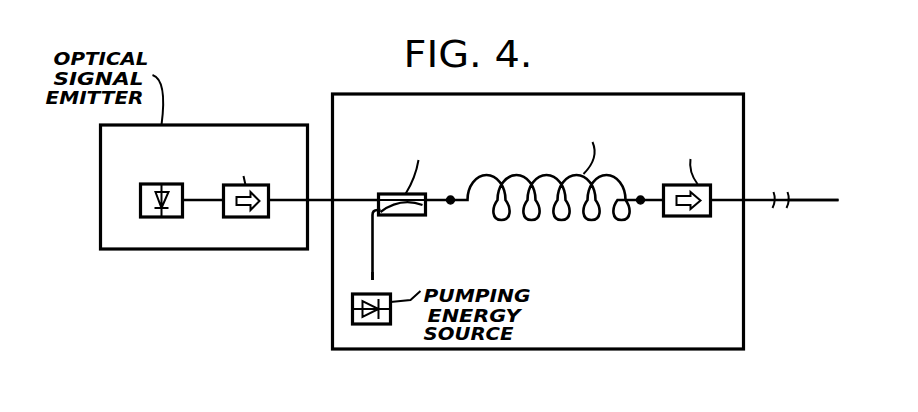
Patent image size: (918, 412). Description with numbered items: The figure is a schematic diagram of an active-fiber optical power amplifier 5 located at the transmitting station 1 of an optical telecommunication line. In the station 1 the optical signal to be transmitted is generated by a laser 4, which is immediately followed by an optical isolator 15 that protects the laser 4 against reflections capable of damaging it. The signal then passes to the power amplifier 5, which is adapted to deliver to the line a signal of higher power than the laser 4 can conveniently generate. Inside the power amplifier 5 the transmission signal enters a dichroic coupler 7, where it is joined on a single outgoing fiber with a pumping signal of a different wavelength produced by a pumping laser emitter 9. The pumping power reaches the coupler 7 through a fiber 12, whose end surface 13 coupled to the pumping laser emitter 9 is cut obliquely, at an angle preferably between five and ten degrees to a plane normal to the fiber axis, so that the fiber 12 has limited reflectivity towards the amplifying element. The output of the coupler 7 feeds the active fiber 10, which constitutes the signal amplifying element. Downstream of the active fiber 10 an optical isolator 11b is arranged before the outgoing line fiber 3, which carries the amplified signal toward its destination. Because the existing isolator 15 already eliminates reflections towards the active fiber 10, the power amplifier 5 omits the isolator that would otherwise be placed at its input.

The station 1 is at (100, 142).
The line fiber 3 is at (807, 198).
The laser 4 is at (148, 182).
The power amplifier 5 is at (355, 92).
The dichroic coupler 7 is at (407, 213).
The pumping laser emitter 9 is at (362, 292).
The active fiber 10 is at (538, 218).
The optical isolator 11b is at (690, 215).
The fiber 12 is at (372, 248).
The end surface 13 is at (377, 278).
The optical isolator 15 is at (233, 217).